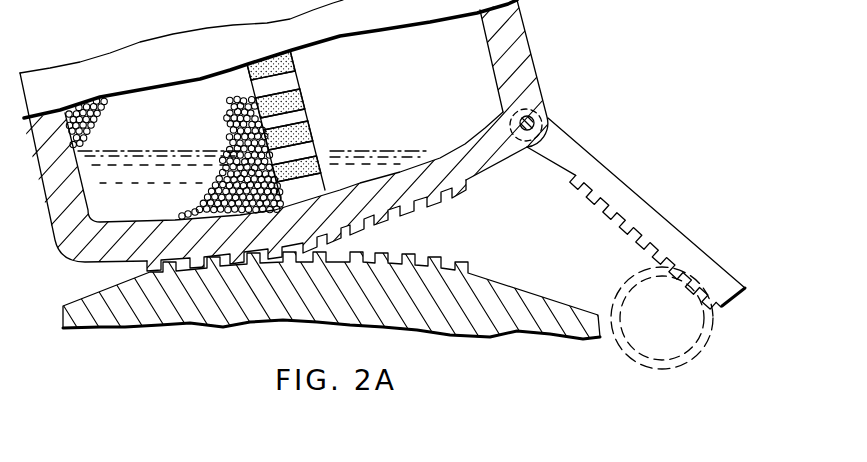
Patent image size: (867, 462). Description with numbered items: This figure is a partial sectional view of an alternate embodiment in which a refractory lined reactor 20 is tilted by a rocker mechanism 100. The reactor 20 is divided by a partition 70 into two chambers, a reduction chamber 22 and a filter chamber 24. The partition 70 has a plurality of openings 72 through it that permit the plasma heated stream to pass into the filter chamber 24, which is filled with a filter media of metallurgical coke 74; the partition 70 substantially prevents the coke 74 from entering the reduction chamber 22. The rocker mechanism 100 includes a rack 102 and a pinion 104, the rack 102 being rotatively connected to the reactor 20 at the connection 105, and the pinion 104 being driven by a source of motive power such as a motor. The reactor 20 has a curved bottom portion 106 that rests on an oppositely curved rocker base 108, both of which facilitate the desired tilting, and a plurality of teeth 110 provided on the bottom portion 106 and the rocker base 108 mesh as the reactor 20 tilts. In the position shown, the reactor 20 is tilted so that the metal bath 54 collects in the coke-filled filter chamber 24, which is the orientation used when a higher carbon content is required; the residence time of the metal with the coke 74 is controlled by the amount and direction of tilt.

The reactor 20 is at (588, 29).
The reduction chamber 22 is at (470, 110).
The filter chamber 24 is at (152, 130).
The metal bath 54 is at (373, 156).
The partition 70 is at (294, 67).
The openings 72 is at (300, 115).
The metallurgical coke 74 is at (236, 108).
The rocker mechanism 100 is at (549, 251).
The rack 102 is at (625, 226).
The pinion 104 is at (716, 312).
The rotative connection 105 is at (548, 116).
The curved bottom portion 106 is at (503, 157).
The rocker base 108 is at (542, 290).
The teeth 110 is at (462, 258).